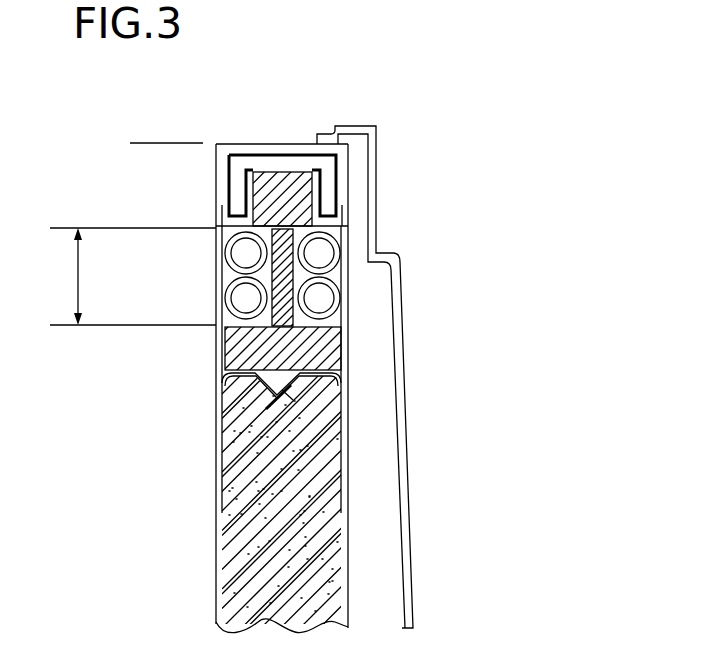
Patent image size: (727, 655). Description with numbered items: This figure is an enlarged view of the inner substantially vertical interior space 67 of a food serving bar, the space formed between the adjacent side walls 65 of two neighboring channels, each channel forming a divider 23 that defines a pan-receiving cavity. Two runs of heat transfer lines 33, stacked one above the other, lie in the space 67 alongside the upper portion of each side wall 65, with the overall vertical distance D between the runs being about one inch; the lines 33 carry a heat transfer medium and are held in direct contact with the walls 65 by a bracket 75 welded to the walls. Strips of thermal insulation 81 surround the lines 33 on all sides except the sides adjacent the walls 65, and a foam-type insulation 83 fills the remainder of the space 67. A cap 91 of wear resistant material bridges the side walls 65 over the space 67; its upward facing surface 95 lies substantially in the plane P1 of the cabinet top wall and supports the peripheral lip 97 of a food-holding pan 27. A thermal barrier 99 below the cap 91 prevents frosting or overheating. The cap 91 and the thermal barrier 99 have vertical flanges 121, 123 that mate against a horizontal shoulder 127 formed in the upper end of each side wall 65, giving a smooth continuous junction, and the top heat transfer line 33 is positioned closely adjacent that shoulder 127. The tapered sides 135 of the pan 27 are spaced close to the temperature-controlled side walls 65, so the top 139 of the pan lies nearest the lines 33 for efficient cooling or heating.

The plane of the top wall P1 is at (147, 143).
The overall vertical distance D is at (133, 276).
The divider 23 is at (200, 492).
The pan 27 is at (403, 495).
The heat transfer lines 33 is at (228, 264).
The side walls 65 is at (216, 555).
The inner substantially vertical interior space 67 is at (278, 576).
The bracket 75 is at (224, 413).
The strips of thermal insulation 81 is at (283, 183).
The foam-type insulation 83 is at (333, 550).
The cap 91 is at (222, 185).
The upward facing surface 95 is at (294, 144).
The peripheral lip 97 is at (377, 124).
The thermal barrier 99 is at (332, 182).
The vertical flange of cap 121 is at (216, 150).
The vertical flange of thermal barrier 123 is at (233, 169).
The horizontal shoulder 127 is at (230, 218).
The sides of the pan 135 is at (405, 433).
The top of the pan 139 is at (375, 126).